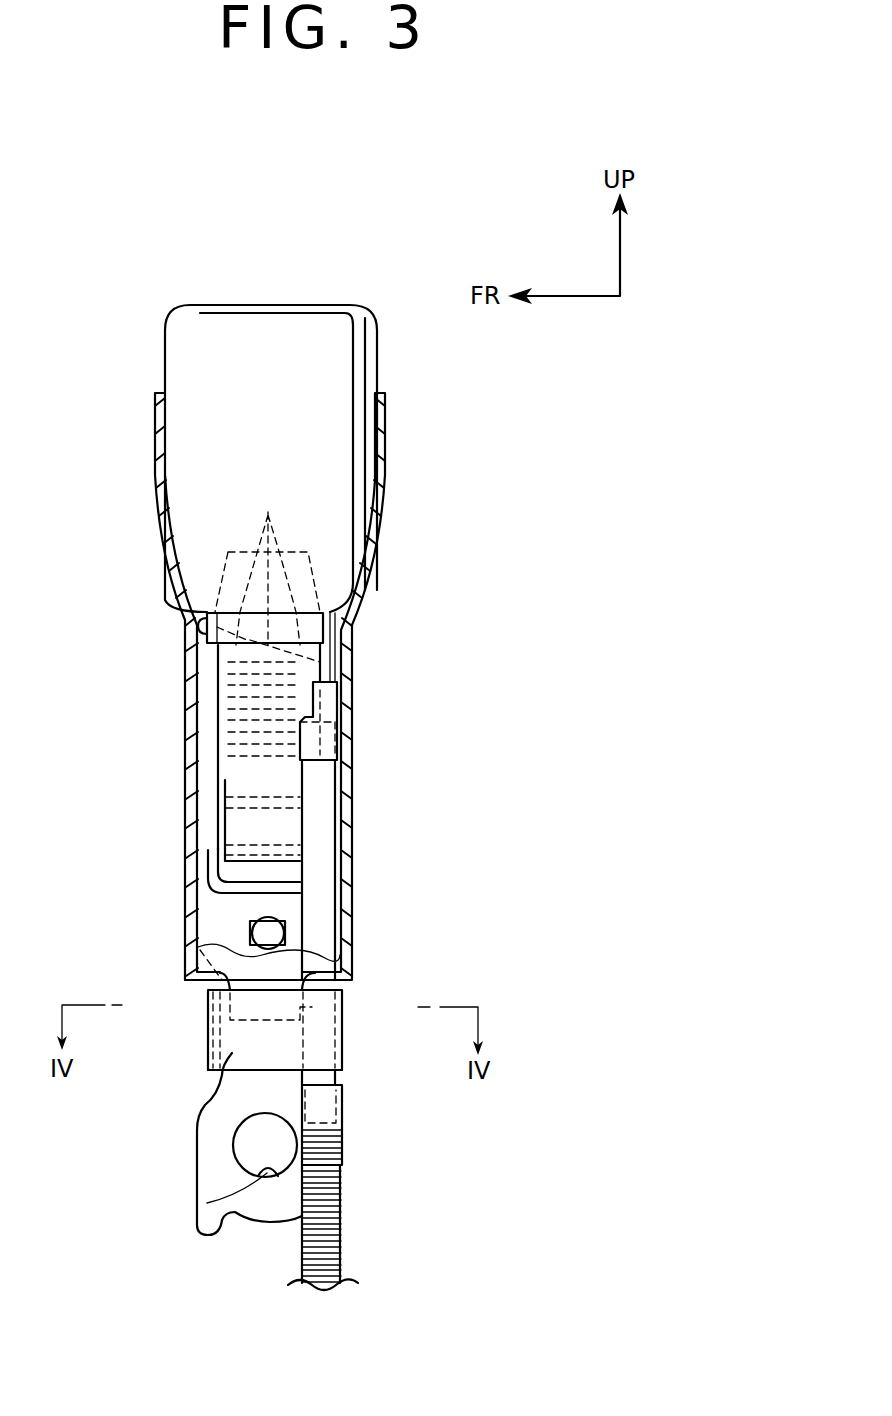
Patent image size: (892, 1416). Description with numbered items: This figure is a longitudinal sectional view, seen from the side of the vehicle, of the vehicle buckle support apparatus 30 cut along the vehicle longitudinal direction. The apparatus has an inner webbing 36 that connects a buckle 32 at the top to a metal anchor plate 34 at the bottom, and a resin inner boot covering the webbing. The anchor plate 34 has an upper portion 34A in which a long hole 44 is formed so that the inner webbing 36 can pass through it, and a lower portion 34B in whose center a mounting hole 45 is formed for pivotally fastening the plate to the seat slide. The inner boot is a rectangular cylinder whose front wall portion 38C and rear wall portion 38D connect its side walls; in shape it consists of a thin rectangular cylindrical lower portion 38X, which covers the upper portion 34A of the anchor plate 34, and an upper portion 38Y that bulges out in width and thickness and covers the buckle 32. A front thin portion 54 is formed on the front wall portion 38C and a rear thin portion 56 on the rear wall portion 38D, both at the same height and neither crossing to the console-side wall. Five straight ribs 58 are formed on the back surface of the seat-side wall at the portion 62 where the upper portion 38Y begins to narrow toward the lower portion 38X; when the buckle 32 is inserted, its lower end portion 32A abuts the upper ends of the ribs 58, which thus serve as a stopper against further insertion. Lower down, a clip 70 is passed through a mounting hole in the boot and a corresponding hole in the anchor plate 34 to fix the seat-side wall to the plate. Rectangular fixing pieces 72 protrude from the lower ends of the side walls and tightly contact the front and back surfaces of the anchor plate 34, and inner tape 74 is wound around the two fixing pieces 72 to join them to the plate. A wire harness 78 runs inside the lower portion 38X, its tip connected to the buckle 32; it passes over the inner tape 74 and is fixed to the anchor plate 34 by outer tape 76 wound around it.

The vehicle buckle support apparatus 30 is at (520, 626).
The buckle 32 is at (301, 298).
The lower end portion of the buckle 32A is at (355, 625).
The anchor plate 34 is at (188, 1138).
The upper portion of the anchor plate 34A is at (215, 940).
The lower portion of the anchor plate 34B is at (205, 1180).
The inner webbing 36 is at (230, 782).
The front wall portion 38C is at (188, 720).
The rear wall portion 38D is at (350, 735).
The lower portion of the inner boot 38X is at (350, 840).
The upper portion of the inner boot 38Y is at (383, 480).
The long hole 44 is at (240, 868).
The mounting hole 45 is at (268, 1180).
The front thin portion 54 is at (190, 770).
The rear thin portion 56 is at (348, 770).
The ribs 58 is at (267, 512).
The portion that starts to become narrow 62 is at (185, 620).
The clip 70 is at (285, 925).
The fixing piece 72 is at (342, 1015).
The inner tape 74 is at (208, 1035).
The outer tape 76 is at (215, 1067).
The wire harness 78 is at (345, 1223).